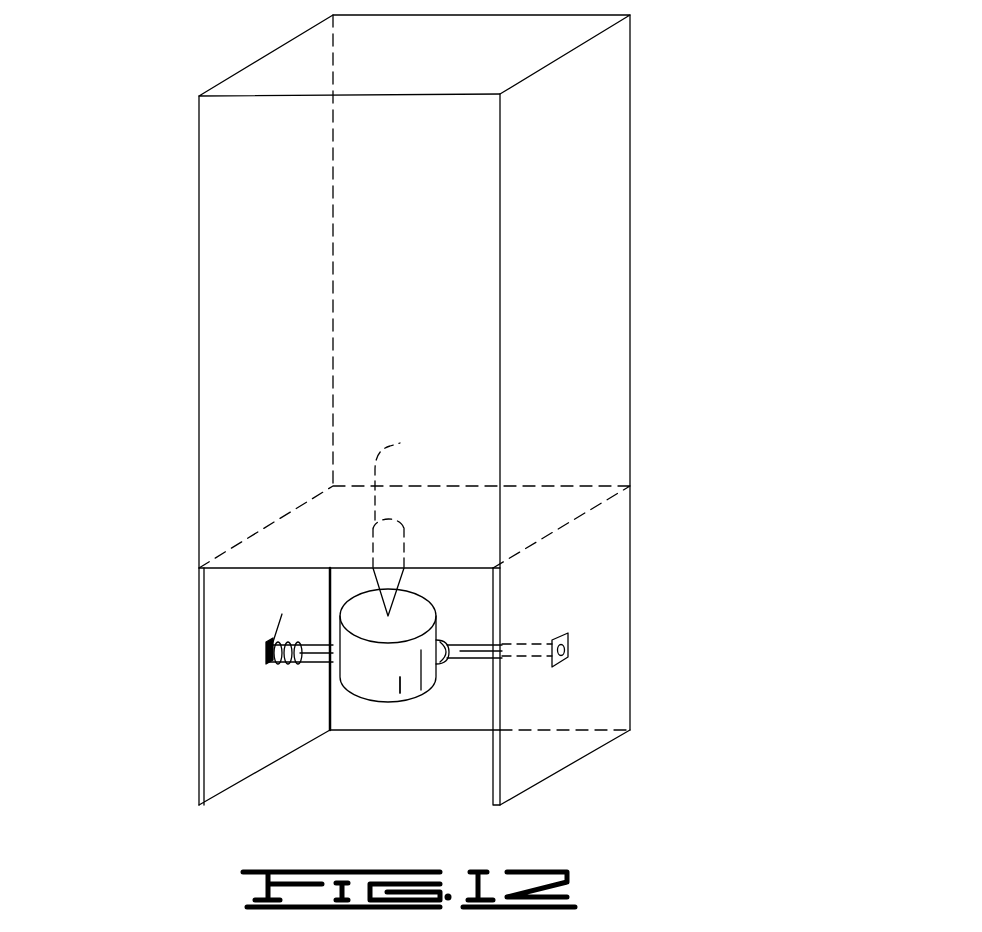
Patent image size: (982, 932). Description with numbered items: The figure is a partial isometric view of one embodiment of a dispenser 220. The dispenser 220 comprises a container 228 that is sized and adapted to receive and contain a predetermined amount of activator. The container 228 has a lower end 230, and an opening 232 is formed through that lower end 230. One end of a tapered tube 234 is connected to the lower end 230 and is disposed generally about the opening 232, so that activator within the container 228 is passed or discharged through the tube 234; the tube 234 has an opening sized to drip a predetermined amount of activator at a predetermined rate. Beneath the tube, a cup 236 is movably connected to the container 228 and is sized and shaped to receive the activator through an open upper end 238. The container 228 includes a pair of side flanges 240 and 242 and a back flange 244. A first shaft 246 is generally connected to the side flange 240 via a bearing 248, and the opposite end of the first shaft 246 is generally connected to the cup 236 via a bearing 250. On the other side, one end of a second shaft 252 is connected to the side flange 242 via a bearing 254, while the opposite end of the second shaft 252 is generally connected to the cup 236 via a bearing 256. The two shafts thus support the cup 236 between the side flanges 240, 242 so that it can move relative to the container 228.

The dispenser 220 is at (646, 153).
The container 228 is at (598, 280).
The lower end 230 is at (577, 520).
The opening 232 is at (413, 524).
The tapered tube 234 is at (366, 542).
The cup 236 is at (397, 692).
The open upper end 238 is at (437, 607).
The side flange 240 is at (197, 662).
The side flange 242 is at (618, 673).
The back flange 244 is at (465, 722).
The first shaft 246 is at (320, 658).
The bearing 248 is at (270, 663).
The bearing 250 is at (332, 640).
The second shaft 252 is at (462, 653).
The bearing 254 is at (560, 630).
The bearing 256 is at (440, 664).